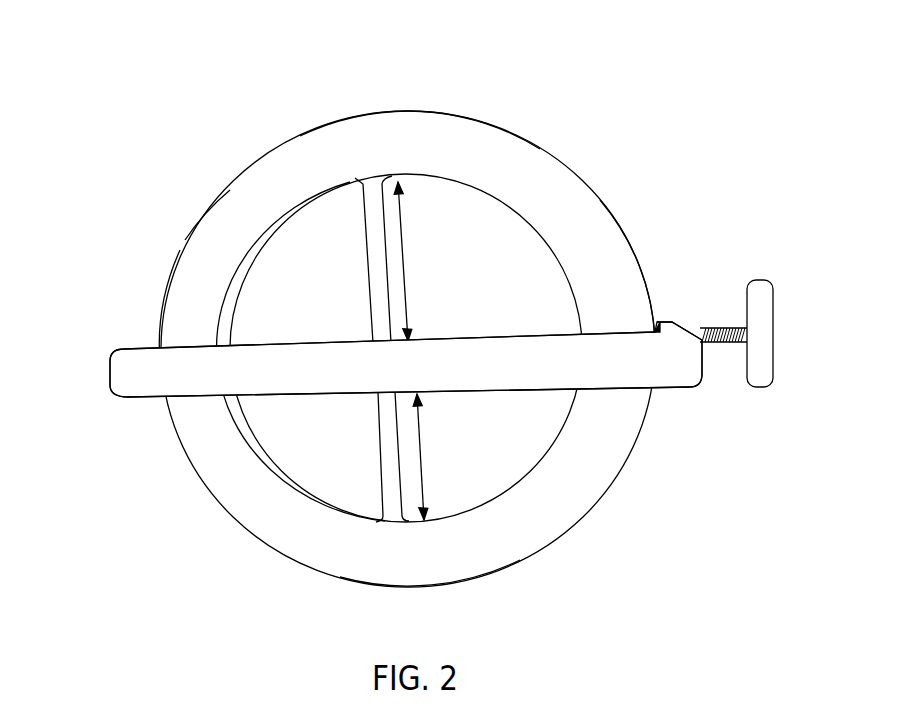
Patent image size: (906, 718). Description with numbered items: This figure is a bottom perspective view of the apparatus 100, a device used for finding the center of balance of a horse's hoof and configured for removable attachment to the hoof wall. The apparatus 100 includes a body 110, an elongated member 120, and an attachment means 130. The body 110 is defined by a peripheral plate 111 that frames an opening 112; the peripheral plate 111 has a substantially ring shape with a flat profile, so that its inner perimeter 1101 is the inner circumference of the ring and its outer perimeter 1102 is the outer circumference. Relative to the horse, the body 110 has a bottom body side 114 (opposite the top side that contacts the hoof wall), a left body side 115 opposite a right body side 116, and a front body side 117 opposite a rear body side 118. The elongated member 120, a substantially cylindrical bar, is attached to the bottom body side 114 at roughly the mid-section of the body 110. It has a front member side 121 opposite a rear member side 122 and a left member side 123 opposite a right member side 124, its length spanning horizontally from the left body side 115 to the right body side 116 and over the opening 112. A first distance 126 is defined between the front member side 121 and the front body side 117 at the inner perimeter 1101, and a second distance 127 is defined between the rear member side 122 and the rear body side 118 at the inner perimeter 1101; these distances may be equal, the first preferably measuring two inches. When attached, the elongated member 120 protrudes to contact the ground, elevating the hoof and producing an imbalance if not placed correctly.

The apparatus 100 is at (675, 68).
The body 110 is at (392, 335).
The peripheral plate 111 is at (208, 243).
The opening 112 is at (510, 277).
The bottom body side 114 is at (512, 160).
The left body side 115 is at (178, 317).
The right body side 116 is at (628, 305).
The front body side 117 is at (377, 127).
The rear body side 118 is at (463, 560).
The inner perimeter 1101 is at (472, 185).
The outer perimeter 1102 is at (310, 567).
The elongated member 120 is at (394, 318).
The front member side 121 is at (322, 347).
The rear member side 122 is at (340, 388).
The left member side 123 is at (128, 373).
The right member side 124 is at (688, 370).
The first distance 126 is at (405, 233).
The second distance 127 is at (423, 450).
The attachment means 130 is at (766, 300).